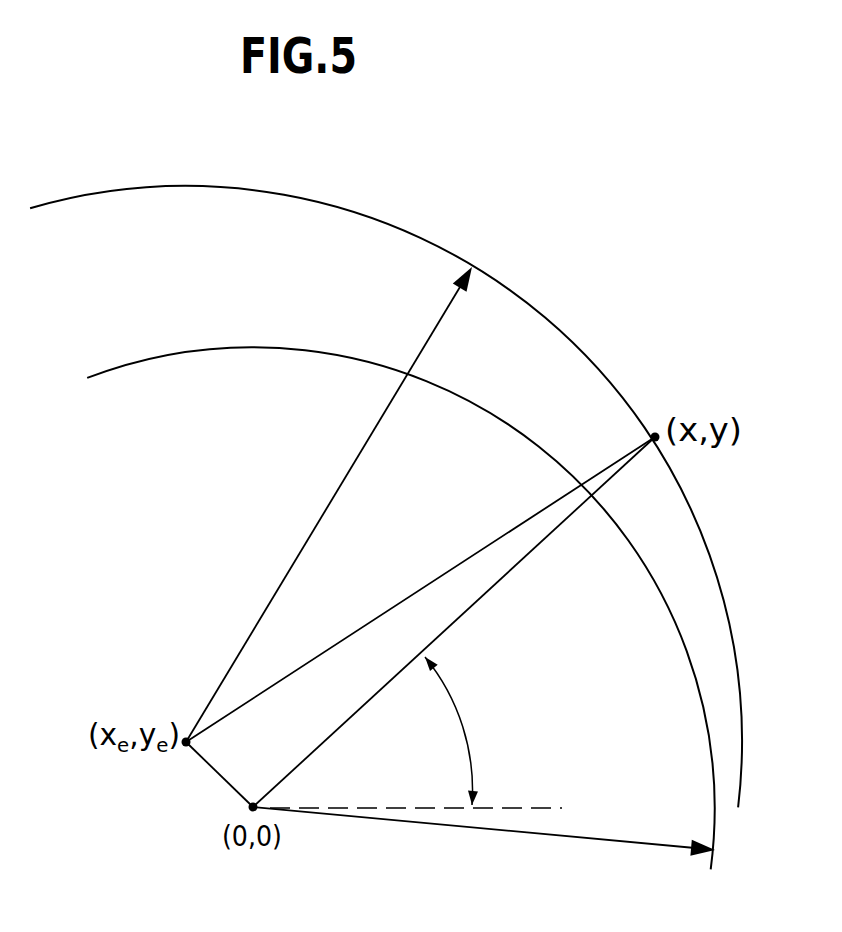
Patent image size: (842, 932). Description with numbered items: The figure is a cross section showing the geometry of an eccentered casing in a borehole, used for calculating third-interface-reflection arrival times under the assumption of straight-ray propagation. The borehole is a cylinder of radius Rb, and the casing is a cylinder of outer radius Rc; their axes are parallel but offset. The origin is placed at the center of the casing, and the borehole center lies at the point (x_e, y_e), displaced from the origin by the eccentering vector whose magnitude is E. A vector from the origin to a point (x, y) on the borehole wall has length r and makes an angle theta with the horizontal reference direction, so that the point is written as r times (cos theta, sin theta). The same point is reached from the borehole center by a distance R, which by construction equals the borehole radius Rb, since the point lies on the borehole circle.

The borehole radius Rb is at (310, 532).
The casing outer radius Rc is at (463, 828).
The distance from eccentric center to borehole point R is at (376, 618).
The vector length from origin to borehole point r is at (467, 612).
The eccentering magnitude E is at (222, 778).
The polar angle theta is at (416, 732).